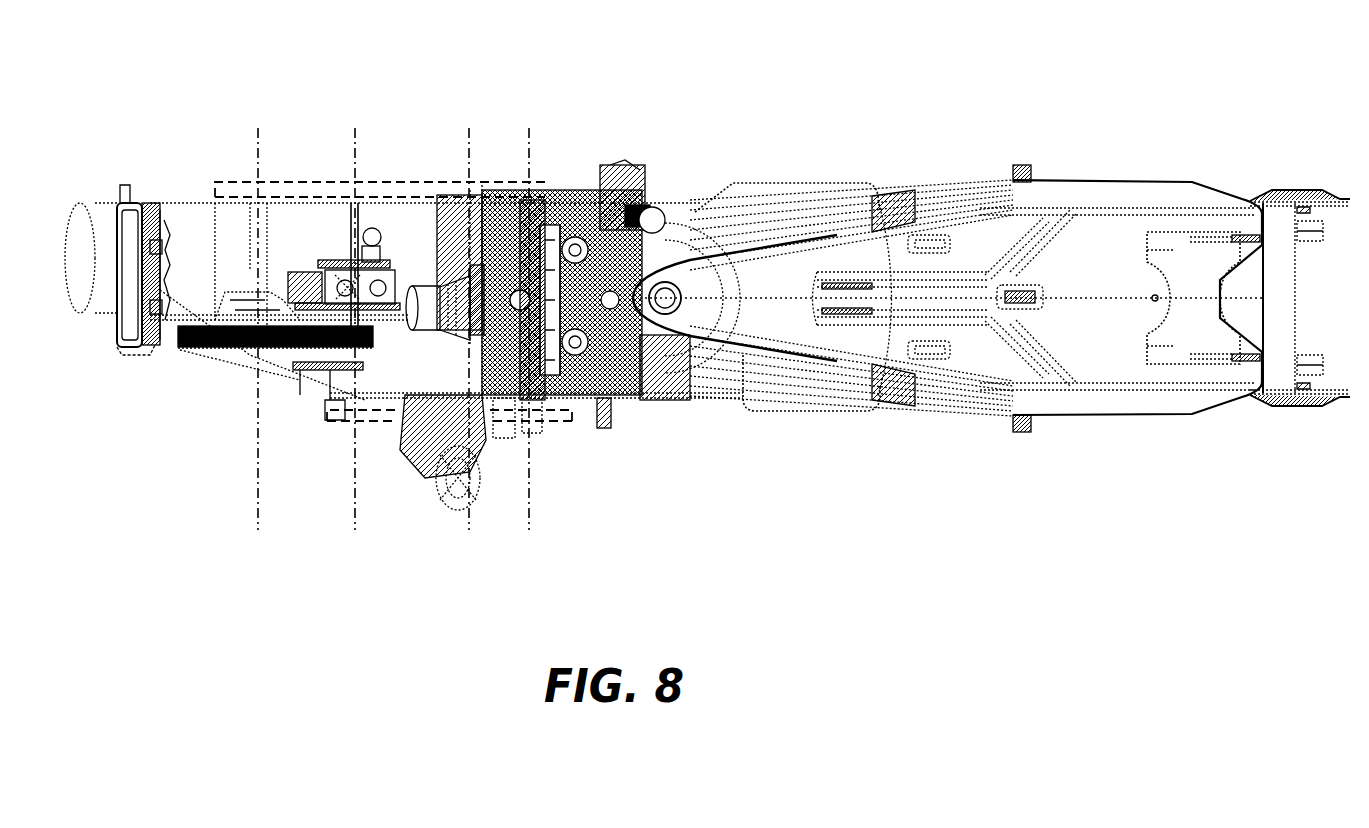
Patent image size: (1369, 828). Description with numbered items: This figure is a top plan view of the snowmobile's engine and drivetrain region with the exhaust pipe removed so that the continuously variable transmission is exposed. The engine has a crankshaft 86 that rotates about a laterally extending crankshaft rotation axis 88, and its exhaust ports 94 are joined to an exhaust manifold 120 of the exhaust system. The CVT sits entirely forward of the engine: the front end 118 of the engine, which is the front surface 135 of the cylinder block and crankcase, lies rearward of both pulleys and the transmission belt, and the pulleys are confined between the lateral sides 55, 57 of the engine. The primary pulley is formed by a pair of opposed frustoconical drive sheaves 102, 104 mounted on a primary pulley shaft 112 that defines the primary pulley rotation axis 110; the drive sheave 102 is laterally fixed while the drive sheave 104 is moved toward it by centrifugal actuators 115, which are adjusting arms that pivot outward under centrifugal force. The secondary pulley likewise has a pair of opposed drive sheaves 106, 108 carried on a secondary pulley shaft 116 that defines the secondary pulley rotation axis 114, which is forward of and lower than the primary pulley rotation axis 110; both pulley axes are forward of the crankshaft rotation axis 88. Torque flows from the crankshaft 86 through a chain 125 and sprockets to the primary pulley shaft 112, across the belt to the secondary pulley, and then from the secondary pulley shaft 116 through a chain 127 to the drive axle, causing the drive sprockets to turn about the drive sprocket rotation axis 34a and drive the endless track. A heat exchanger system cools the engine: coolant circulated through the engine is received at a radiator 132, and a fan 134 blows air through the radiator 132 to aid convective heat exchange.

The drive sprocket rotation axis 34a is at (469, 518).
The lateral side of the engine 55 is at (534, 235).
The lateral side of the engine 57 is at (508, 405).
The crankshaft 86 is at (530, 405).
The crankshaft rotation axis 88 is at (529, 518).
The exhaust ports 94 is at (540, 245).
The drive sheave 102 is at (318, 367).
The drive sheave 104 is at (420, 265).
The drive sheave 106 is at (198, 350).
The drive sheave 108 is at (272, 313).
The primary pulley rotation axis 110 is at (355, 518).
The primary pulley shaft 112 is at (345, 227).
The secondary pulley rotation axis 114 is at (258, 518).
The centrifugal actuators 115 is at (372, 260).
The secondary pulley shaft 116 is at (250, 270).
The front end of the engine 118 is at (447, 348).
The exhaust manifold 120 is at (478, 265).
The chain 125 is at (553, 413).
The chain 127 is at (228, 182).
The radiator 132 is at (150, 242).
The fan 134 is at (122, 331).
The front surface 135 is at (447, 348).